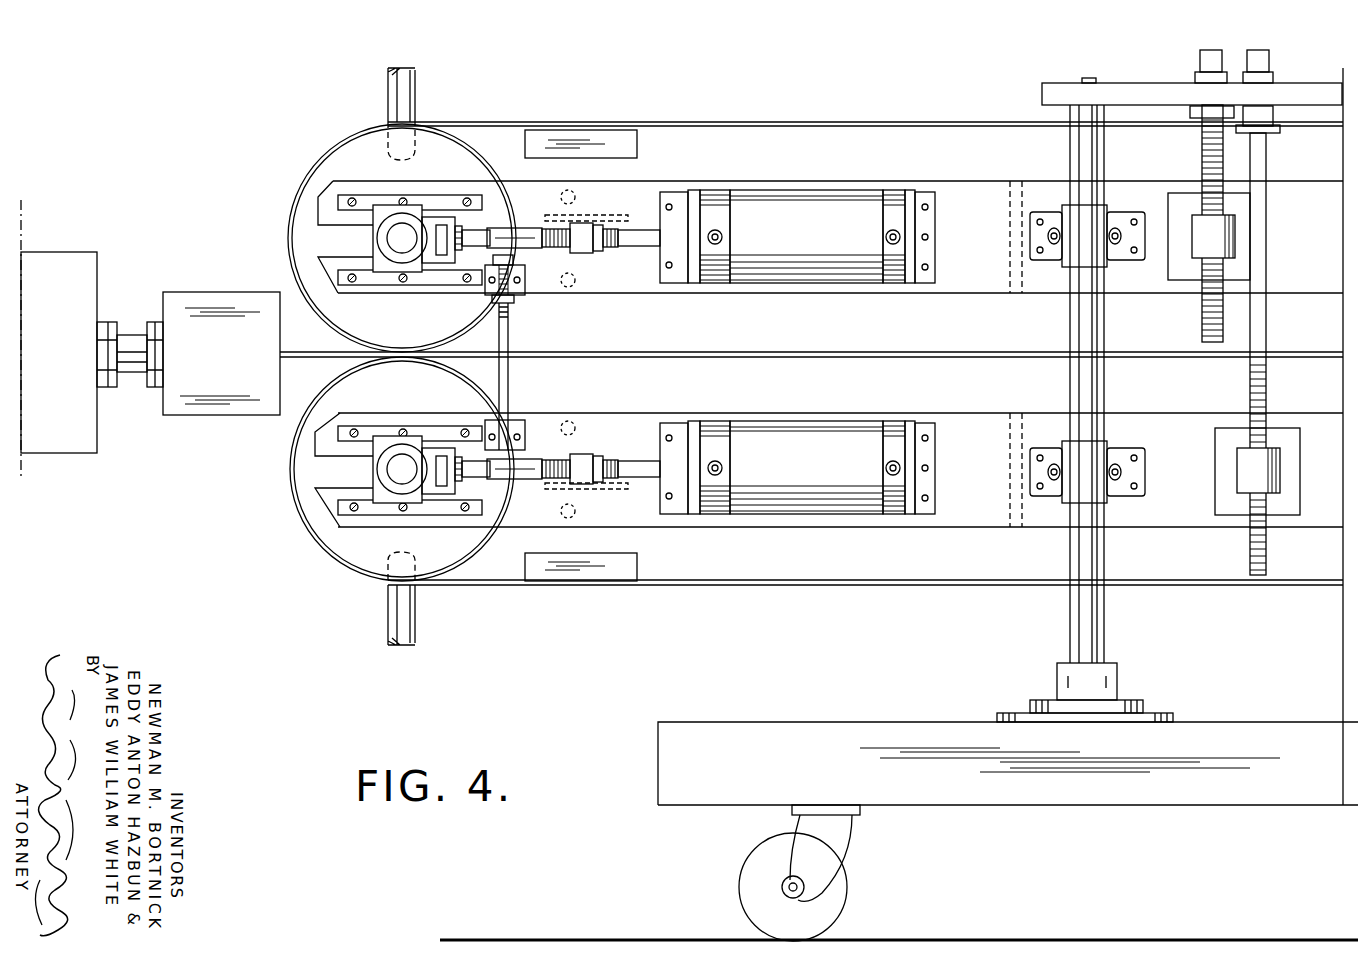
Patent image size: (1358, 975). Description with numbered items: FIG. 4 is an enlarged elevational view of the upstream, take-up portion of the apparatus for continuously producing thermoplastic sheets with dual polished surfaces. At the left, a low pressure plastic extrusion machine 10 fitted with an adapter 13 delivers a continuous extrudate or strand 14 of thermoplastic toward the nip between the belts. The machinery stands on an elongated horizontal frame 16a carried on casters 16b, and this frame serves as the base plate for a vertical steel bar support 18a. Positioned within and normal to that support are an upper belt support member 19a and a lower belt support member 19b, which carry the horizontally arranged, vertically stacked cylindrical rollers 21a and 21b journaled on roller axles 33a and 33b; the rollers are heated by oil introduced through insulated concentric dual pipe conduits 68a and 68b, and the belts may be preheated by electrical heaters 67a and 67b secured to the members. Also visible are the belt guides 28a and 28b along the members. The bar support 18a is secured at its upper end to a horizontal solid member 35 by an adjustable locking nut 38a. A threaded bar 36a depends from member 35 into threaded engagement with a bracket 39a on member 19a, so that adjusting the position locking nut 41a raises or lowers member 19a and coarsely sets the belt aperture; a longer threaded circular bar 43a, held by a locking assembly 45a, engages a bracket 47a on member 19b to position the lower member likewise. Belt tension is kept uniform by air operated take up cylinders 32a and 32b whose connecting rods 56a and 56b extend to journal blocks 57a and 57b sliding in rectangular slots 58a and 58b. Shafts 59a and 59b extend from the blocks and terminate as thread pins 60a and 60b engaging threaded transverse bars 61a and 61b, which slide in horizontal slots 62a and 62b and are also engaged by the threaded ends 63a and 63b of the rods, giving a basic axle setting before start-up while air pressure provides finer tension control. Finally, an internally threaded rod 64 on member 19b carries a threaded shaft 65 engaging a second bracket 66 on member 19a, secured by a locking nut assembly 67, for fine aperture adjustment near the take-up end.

The plastic extrusion machine 10 is at (40, 364).
The adapter 13 is at (228, 364).
The extrudate 14 is at (320, 358).
The horizontal frame 16a is at (728, 768).
The casters 16b is at (748, 866).
The vertical steel bar support 18a is at (1075, 630).
The upper belt support member 19a is at (984, 239).
The lower belt support member 19b is at (984, 479).
The upper cylindrical roller 21a is at (345, 160).
The lower cylindrical roller 21b is at (310, 437).
The upper guide rail 28a is at (716, 123).
The lower guide rail 28b is at (672, 357).
The air operated take up cylinder 32a is at (790, 233).
The air operated take up cylinder 32b is at (800, 466).
The roller axle 33a is at (397, 236).
The roller axle 33b is at (397, 468).
The horizontal solid member 35 is at (1052, 83).
The threaded bar 36a is at (1200, 156).
The adjustable locking nut 38a is at (1096, 80).
The bracket 39a is at (1200, 248).
The position locking nut 41a is at (1200, 82).
The threaded circular bar 43a is at (1266, 310).
The locking assembly 45a is at (1273, 82).
The bracket 47a is at (1224, 482).
The connecting rod 56a is at (656, 230).
The connecting rod 56b is at (656, 440).
The journal block 57a is at (455, 227).
The journal block 57b is at (447, 483).
The rectangular slot 58a is at (320, 212).
The rectangular slot 58b is at (316, 485).
The shaft 59a is at (512, 238).
The shaft 59b is at (513, 479).
The thread pin 60a is at (548, 216).
The thread pin 60b is at (560, 458).
The threaded transverse bar 61a is at (598, 243).
The threaded transverse bar 61b is at (598, 453).
The horizontal slot 62a is at (565, 218).
The horizontal slot 62b is at (577, 487).
The threaded end 63a is at (610, 248).
The threaded end 63b is at (612, 478).
The internally threaded rod 64 is at (515, 420).
The threaded shaft 65 is at (509, 315).
The second bracket 66 is at (516, 290).
The locking nut assembly 67 is at (514, 260).
The electrical heater 67a is at (553, 140).
The electrical heater 67b is at (565, 582).
The concentric dual pipe conduit 68a is at (388, 110).
The concentric dual pipe conduit 68b is at (388, 610).